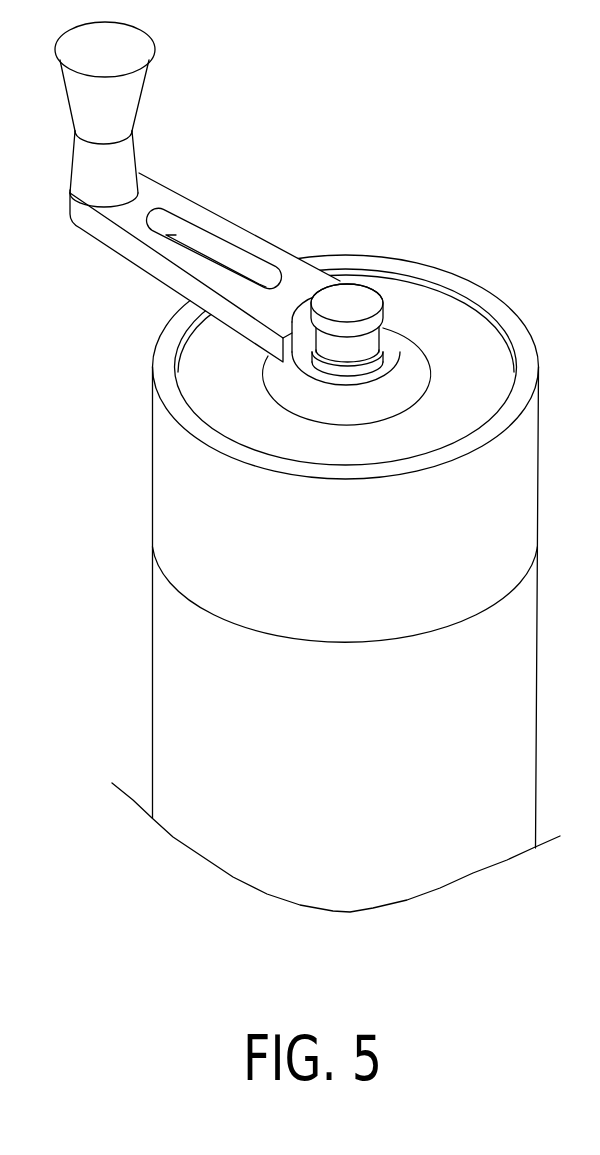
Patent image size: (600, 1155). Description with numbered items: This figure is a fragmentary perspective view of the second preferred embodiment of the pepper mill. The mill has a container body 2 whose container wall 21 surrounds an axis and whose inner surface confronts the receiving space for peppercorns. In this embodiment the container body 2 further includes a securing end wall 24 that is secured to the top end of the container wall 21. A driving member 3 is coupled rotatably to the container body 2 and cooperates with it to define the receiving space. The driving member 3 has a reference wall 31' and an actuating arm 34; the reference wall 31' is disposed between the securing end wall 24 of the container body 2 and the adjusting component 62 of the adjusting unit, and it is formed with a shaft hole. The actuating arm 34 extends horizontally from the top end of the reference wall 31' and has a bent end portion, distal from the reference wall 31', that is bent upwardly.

The container body 2 is at (312, 583).
The container wall 21 is at (190, 724).
The securing end wall 24 is at (180, 498).
The driving member 3 is at (185, 192).
The actuating arm 34 is at (122, 230).
The reference wall 31' is at (264, 358).
The adjusting component 62 is at (390, 289).